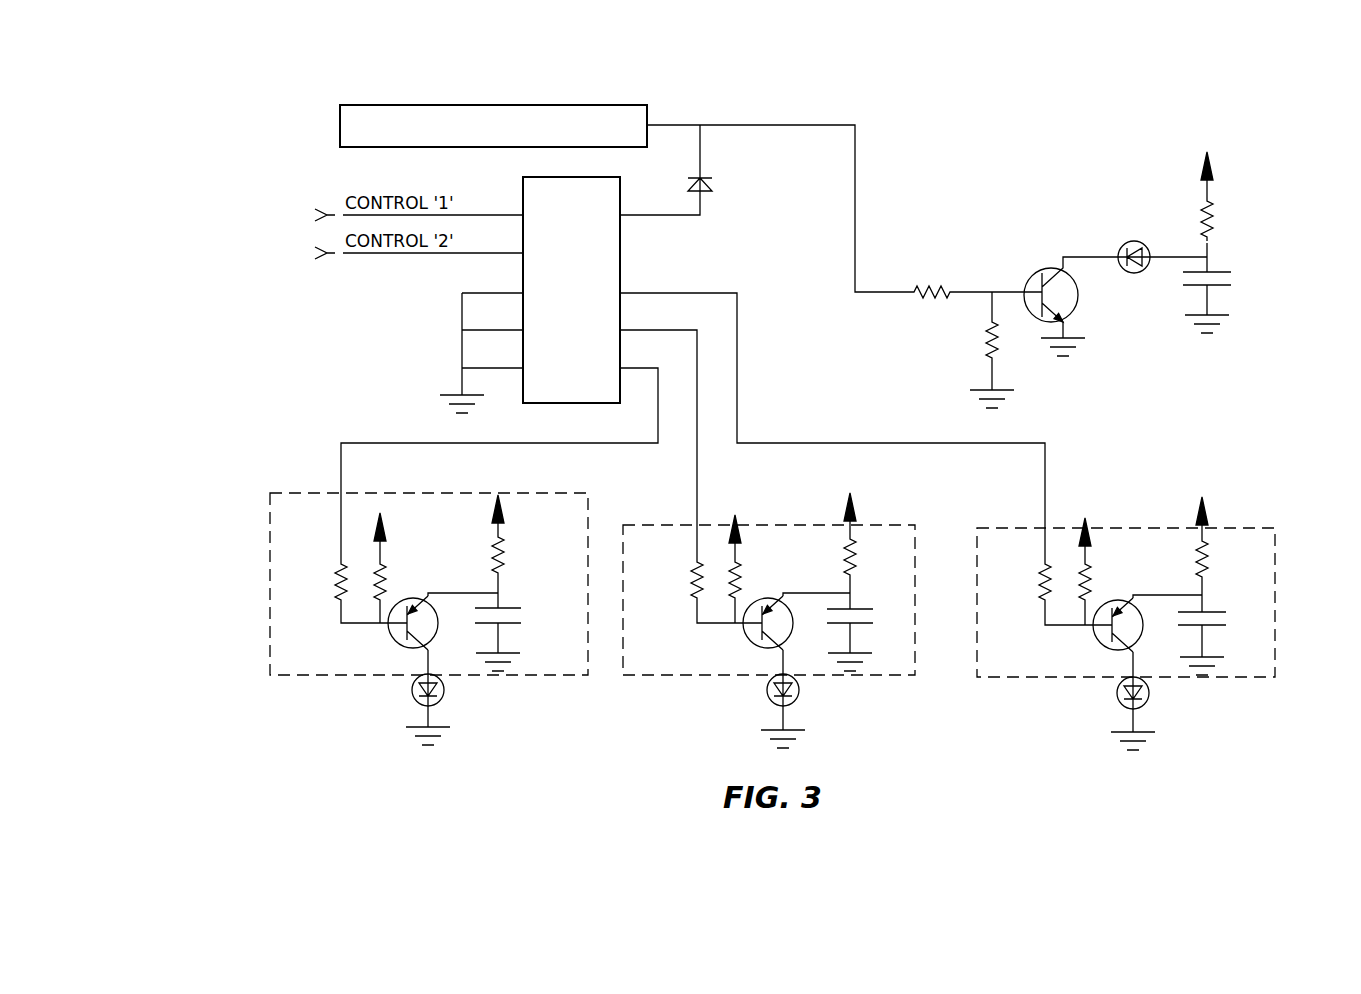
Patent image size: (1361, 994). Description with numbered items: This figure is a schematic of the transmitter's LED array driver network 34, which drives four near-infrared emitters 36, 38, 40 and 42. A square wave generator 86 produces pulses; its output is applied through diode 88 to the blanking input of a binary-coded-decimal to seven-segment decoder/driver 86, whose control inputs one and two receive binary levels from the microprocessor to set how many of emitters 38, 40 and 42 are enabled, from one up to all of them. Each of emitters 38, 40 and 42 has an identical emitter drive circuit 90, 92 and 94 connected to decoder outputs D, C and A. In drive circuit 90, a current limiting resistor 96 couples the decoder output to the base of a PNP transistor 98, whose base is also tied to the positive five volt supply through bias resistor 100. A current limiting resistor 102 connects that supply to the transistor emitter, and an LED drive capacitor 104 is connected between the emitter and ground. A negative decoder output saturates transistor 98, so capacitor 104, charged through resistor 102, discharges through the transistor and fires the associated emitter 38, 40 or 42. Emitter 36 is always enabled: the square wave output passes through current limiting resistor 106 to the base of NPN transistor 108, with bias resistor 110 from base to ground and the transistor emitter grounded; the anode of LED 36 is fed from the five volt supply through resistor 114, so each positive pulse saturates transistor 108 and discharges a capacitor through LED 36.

The array driver network 34 is at (796, 117).
The emitter 36 is at (1122, 242).
The emitter 38 is at (413, 693).
The emitter 40 is at (767, 694).
The emitter 42 is at (1118, 700).
The decoder/driver 86 is at (494, 104).
The diode 88 is at (713, 188).
The emitter drive circuit 90 is at (268, 597).
The emitter drive circuit 92 is at (794, 524).
The emitter drive circuit 94 is at (1277, 578).
The current limiting resistor 96 is at (335, 577).
The PNP transistor 98 is at (436, 610).
The bias resistor 100 is at (384, 575).
The current limiting resistor 102 is at (503, 563).
The LED drive capacitor 104 is at (523, 615).
The current limiting resistor 106 is at (945, 286).
The NPN transistor 108 is at (1030, 318).
The bias resistor 110 is at (985, 343).
The resistor 114 is at (1213, 226).